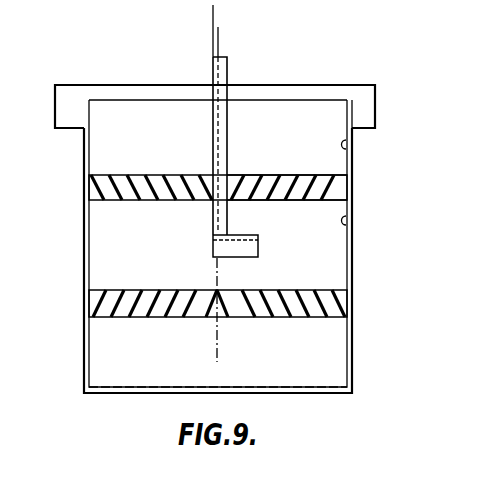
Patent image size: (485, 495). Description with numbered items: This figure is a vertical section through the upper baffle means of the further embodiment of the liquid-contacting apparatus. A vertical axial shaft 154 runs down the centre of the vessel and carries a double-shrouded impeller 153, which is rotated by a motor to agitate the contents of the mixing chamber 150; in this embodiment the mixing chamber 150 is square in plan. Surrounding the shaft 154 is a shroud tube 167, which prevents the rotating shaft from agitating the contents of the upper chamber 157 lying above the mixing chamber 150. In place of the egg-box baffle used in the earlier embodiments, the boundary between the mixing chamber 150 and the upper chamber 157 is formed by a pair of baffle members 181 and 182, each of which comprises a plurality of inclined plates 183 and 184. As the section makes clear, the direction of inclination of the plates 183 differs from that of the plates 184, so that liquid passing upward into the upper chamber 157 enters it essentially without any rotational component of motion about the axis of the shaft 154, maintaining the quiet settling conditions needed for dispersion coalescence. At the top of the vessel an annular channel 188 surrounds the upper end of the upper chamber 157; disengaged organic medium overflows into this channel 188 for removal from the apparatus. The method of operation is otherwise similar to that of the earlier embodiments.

The mixing chamber 150 is at (352, 230).
The upper chamber 157 is at (352, 156).
The annular channel 188 is at (358, 105).
The baffle member 181 is at (172, 175).
The baffle member 182 is at (257, 175).
The inclined plates 183 is at (142, 175).
The inclined plates 184 is at (300, 175).
The vertical axial shaft 154 is at (220, 44).
The shroud tube 167 is at (227, 70).
The double-shrouded impeller 153 is at (250, 236).